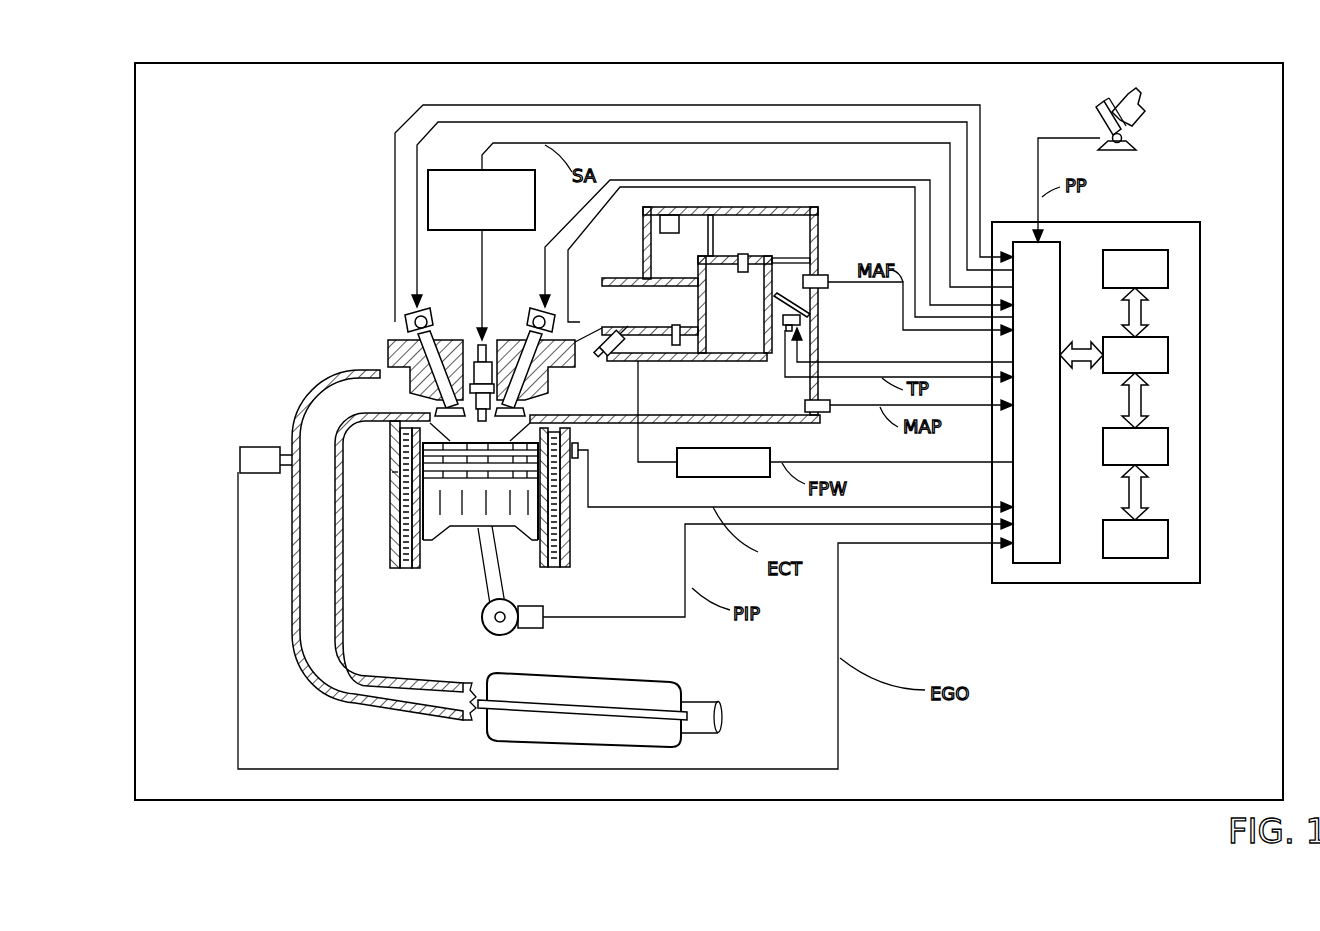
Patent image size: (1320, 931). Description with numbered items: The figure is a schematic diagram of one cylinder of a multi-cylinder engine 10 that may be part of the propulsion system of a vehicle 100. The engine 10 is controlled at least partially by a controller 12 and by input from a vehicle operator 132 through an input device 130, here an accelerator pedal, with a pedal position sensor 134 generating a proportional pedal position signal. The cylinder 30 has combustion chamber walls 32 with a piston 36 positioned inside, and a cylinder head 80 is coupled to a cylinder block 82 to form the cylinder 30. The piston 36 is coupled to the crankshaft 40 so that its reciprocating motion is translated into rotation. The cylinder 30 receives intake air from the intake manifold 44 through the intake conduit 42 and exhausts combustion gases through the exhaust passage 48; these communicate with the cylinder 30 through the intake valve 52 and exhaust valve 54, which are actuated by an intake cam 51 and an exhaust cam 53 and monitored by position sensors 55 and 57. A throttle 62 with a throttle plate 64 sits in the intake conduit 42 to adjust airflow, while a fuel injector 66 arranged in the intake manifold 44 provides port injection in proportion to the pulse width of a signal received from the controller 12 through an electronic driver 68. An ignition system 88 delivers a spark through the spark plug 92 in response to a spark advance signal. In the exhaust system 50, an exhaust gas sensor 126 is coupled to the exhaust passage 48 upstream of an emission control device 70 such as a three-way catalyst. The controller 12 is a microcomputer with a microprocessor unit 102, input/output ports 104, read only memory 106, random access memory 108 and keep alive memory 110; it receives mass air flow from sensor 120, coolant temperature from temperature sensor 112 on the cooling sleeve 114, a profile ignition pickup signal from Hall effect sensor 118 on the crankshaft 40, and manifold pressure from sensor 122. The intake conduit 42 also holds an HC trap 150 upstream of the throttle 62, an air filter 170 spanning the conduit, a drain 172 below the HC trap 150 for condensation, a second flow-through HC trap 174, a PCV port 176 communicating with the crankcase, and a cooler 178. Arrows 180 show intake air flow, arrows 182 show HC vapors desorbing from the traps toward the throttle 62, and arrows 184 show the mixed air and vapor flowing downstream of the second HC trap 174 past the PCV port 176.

The vehicle 100 is at (140, 68).
The engine 10 is at (322, 293).
The controller 12 is at (1190, 222).
The cylinder 30 is at (478, 430).
The combustion chamber walls 32 is at (425, 555).
The piston 36 is at (482, 519).
The crankshaft 40 is at (494, 634).
The intake conduit 42 is at (742, 304).
The intake manifold 44 is at (675, 388).
The exhaust passage 48 is at (399, 541).
The exhaust system 50 is at (270, 386).
The intake cam 51 is at (535, 312).
The intake valve 52 is at (514, 406).
The exhaust cam 53 is at (427, 312).
The exhaust valve 54 is at (440, 410).
The position sensor 55 is at (560, 331).
The position sensor 57 is at (413, 330).
The throttle 62 is at (808, 306).
The throttle plate 64 is at (777, 301).
The fuel injector 66 is at (626, 338).
The electronic driver 68 is at (692, 479).
The emission control device 70 is at (647, 682).
The cylinder head 80 is at (392, 457).
The cylinder block 82 is at (392, 472).
The ignition system 88 is at (440, 170).
The spark plug 92 is at (487, 348).
The microprocessor unit 102 is at (1170, 352).
The input/output ports 104 is at (1062, 248).
The read only memory 106 is at (1170, 266).
The random access memory 108 is at (1170, 445).
The keep alive memory 110 is at (1170, 538).
The temperature sensor 112 is at (583, 452).
The cooling sleeve 114 is at (557, 527).
The Hall effect sensor 118 is at (537, 630).
The mass air flow sensor 120 is at (826, 278).
The manifold pressure sensor 122 is at (828, 414).
The exhaust gas sensor 126 is at (240, 454).
The input device 130 is at (1097, 115).
The vehicle operator 132 is at (1143, 105).
The pedal position sensor 134 is at (1130, 140).
The HC trap 150 is at (670, 233).
The air filter 170 is at (682, 285).
The drain 172 is at (682, 337).
The second HC trap 174 is at (708, 232).
The PCV port 176 is at (740, 266).
The cooler 178 is at (812, 265).
The arrows 180 is at (619, 298).
The arrows 182 is at (692, 220).
The arrows 184 is at (790, 240).